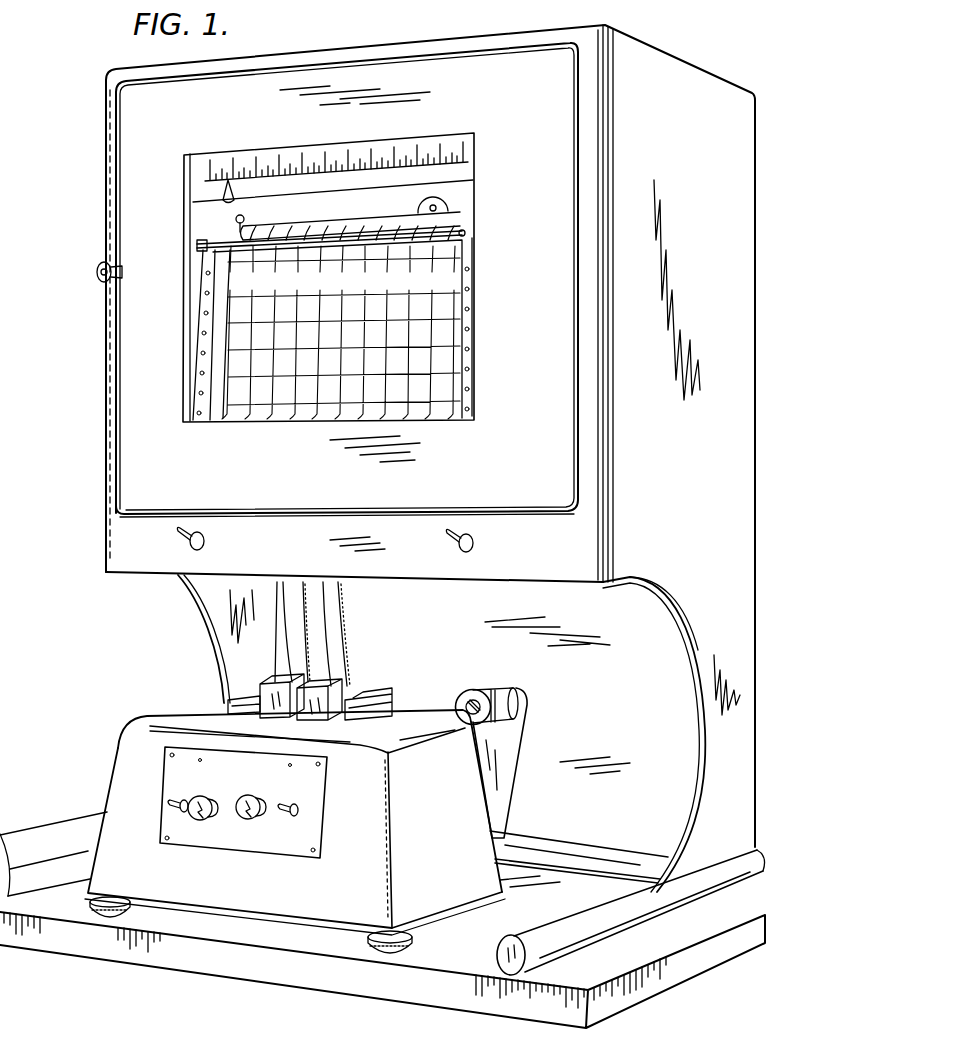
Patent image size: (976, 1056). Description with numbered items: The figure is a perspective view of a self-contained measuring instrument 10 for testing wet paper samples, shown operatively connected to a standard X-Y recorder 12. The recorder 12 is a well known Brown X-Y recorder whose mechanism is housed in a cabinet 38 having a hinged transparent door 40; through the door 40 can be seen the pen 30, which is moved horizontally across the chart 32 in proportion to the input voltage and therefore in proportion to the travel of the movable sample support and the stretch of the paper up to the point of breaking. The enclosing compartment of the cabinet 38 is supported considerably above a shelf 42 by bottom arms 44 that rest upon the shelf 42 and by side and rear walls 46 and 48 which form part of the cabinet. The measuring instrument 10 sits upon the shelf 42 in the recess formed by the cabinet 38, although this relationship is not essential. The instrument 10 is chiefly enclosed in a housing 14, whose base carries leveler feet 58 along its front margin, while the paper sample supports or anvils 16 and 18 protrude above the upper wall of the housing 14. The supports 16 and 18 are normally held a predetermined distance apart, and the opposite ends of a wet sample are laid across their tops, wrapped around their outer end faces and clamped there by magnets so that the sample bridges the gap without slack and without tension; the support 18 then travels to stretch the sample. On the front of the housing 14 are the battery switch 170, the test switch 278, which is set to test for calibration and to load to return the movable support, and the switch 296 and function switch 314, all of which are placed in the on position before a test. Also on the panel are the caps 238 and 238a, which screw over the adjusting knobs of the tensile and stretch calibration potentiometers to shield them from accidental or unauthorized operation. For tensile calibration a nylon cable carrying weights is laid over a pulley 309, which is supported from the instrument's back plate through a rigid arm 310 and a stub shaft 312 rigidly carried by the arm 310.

The measuring instrument 10 is at (128, 720).
The recorder 12 is at (100, 313).
The housing 14 is at (113, 780).
The paper sample support 16 is at (272, 678).
The movable paper sample support 18 is at (355, 684).
The pen 30 is at (205, 243).
The chart 32 is at (430, 340).
The cabinet 38 is at (98, 549).
The hinged transparent door 40 is at (127, 166).
The shelf 42 is at (247, 972).
The bottom arms 44 is at (60, 855).
The side wall 46 is at (217, 612).
The rear wall 48 is at (660, 598).
The leveler feet 58 is at (125, 918).
The battery switch 170 is at (168, 808).
The cap 238 is at (262, 817).
The cap 238a is at (220, 802).
The test switch 278 is at (302, 811).
The switch 296 is at (207, 538).
The pulley 309 is at (467, 692).
The rigid arm 310 is at (508, 736).
The stub shaft 312 is at (500, 692).
The function switch 314 is at (478, 544).